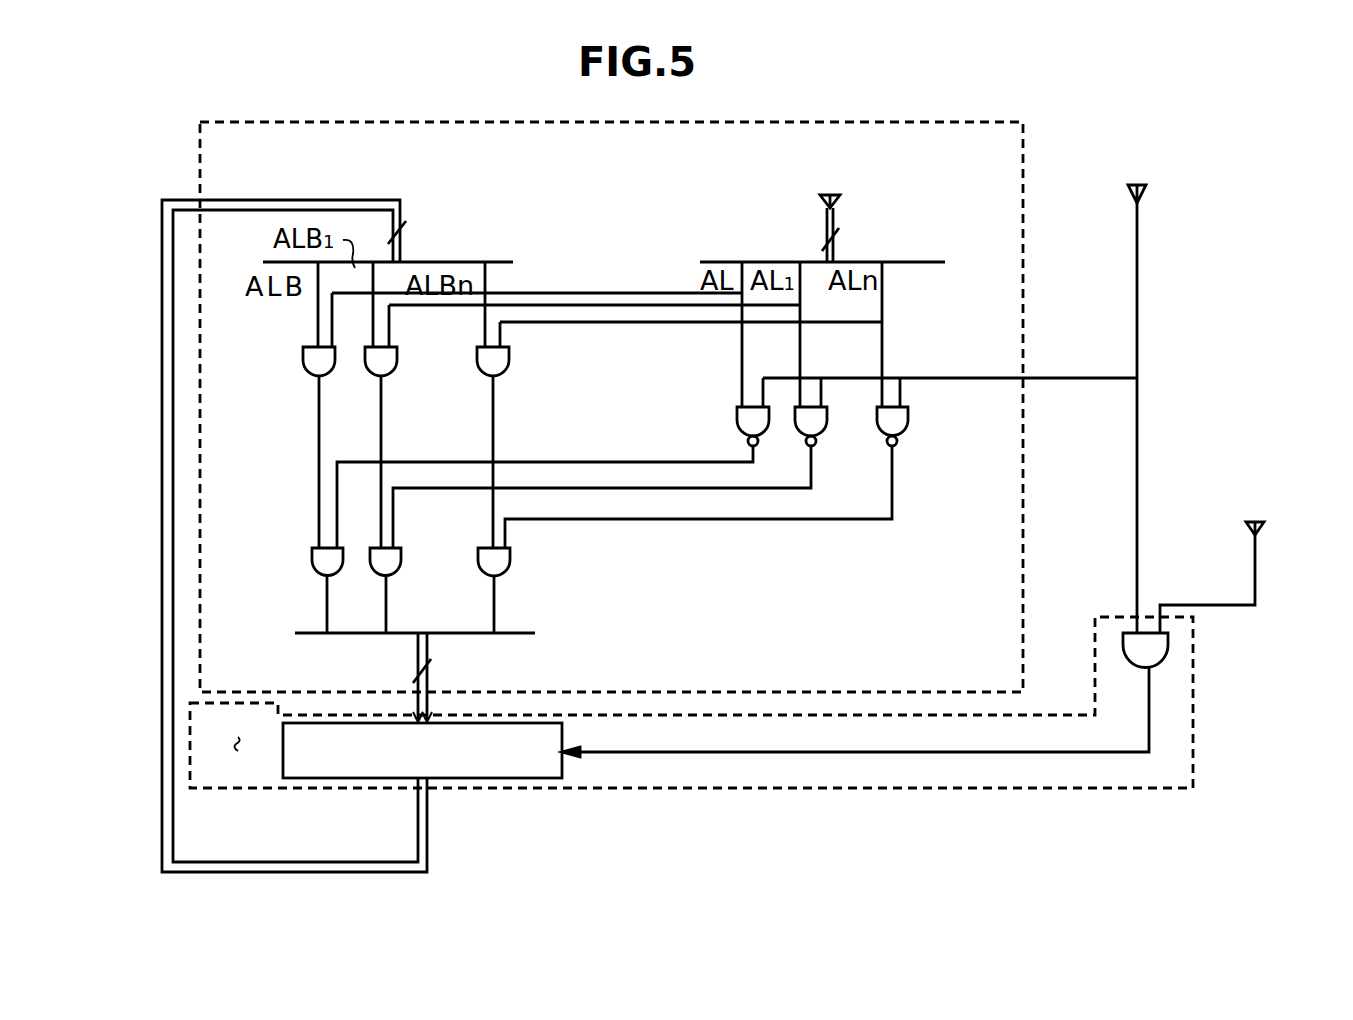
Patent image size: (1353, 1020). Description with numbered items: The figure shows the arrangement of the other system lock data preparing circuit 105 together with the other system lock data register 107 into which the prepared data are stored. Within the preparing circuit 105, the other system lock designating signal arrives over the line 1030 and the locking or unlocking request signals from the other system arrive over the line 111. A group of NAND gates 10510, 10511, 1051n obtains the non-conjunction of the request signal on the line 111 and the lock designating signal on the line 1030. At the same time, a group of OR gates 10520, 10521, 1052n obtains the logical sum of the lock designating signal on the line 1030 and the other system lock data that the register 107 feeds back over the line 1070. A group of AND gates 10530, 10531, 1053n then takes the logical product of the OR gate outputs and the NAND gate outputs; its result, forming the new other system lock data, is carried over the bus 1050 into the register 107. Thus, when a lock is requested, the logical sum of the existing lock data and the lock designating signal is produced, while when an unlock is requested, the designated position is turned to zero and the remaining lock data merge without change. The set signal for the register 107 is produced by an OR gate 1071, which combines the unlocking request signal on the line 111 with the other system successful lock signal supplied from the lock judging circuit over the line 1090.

The other system lock data preparing circuit 105 is at (815, 121).
The other system lock data register 107 is at (493, 790).
The line 111 is at (1137, 273).
The line 1030 is at (836, 222).
The comparator output bus 1050 is at (430, 703).
The line 1070 is at (162, 495).
The OR gate 1071 is at (1166, 660).
The line 1090 is at (1255, 572).
The NAND gate 10510 is at (738, 419).
The NAND gate 10511 is at (827, 420).
The NAND gate 1051n is at (906, 414).
The OR gate 10520 is at (304, 372).
The OR gate 10521 is at (397, 362).
The OR gate 1052n is at (509, 362).
The AND gate 10530 is at (317, 559).
The AND gate 10531 is at (401, 562).
The AND gate 1053n is at (510, 562).